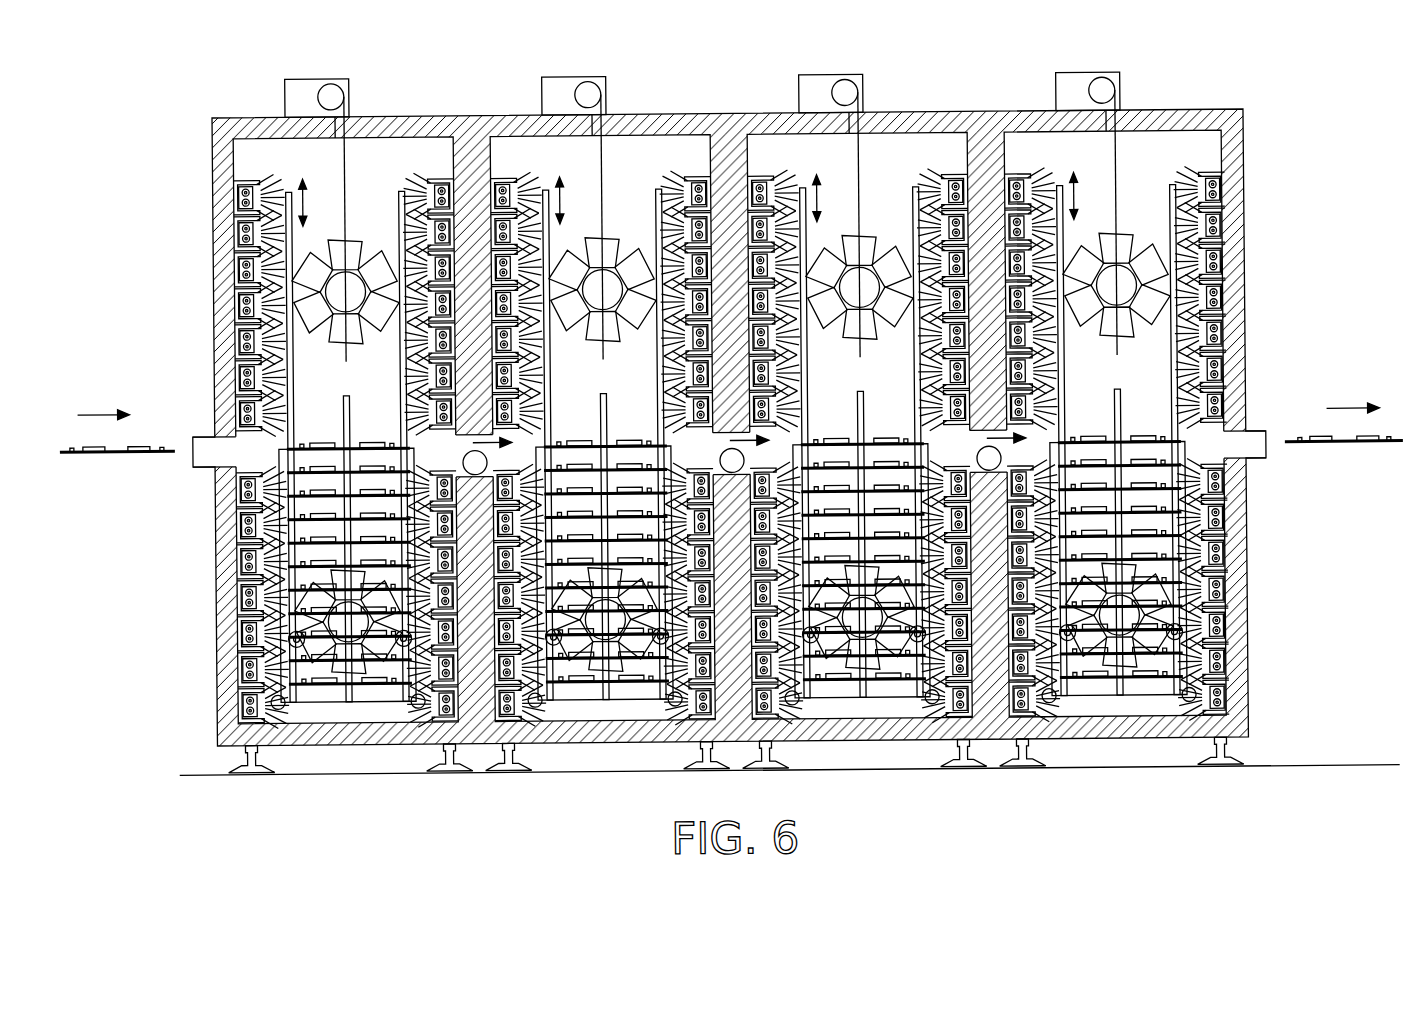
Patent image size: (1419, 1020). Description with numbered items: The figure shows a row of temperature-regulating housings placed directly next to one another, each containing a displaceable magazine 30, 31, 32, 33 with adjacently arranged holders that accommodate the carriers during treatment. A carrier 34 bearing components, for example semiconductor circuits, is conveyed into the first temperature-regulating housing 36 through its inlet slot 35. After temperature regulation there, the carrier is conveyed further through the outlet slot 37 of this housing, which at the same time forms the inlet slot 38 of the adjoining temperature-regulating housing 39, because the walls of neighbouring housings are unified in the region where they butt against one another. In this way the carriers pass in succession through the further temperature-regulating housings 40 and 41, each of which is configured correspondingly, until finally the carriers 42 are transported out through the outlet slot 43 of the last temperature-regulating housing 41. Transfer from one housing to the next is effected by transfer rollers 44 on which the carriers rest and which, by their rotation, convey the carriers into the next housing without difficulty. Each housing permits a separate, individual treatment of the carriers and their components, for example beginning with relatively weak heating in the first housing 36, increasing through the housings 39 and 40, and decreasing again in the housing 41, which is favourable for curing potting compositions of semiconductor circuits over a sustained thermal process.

The magazine 30 is at (323, 704).
The magazine 31 is at (592, 705).
The magazine 32 is at (880, 709).
The magazine 33 is at (1155, 713).
The carrier 34 is at (129, 457).
The inlet slot 35 is at (219, 450).
The first temperature-regulating housing 36 is at (262, 125).
The outlet slot 37 is at (444, 447).
The inlet slot 38 is at (510, 458).
The temperature-regulating housing 39 is at (653, 127).
The temperature-regulating housing 40 is at (771, 128).
The temperature-regulating housing 41 is at (1028, 125).
The carrier 42 is at (1342, 455).
The outlet slot 43 is at (1236, 454).
The transfer roller 44 is at (460, 464).